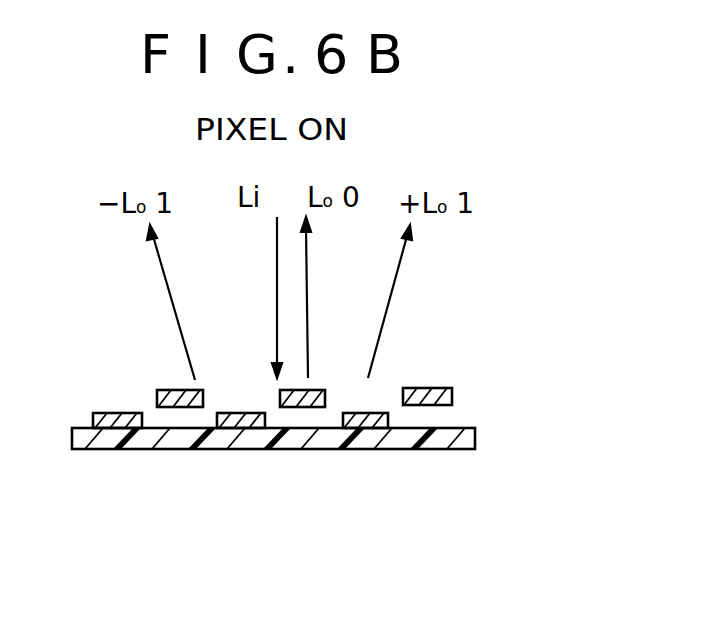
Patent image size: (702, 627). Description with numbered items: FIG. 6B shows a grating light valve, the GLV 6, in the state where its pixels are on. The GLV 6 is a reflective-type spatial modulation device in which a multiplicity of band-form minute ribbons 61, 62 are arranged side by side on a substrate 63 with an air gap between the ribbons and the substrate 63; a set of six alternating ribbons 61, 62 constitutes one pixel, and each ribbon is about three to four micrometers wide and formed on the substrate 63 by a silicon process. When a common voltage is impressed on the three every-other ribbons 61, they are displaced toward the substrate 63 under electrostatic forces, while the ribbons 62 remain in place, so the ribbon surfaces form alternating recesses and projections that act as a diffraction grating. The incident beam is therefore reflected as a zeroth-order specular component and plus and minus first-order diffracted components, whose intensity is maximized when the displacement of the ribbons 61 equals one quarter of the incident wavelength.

The GLV 6 is at (512, 398).
The ribbon 61 is at (110, 418).
The ribbon 62 is at (176, 398).
The substrate 63 is at (462, 440).